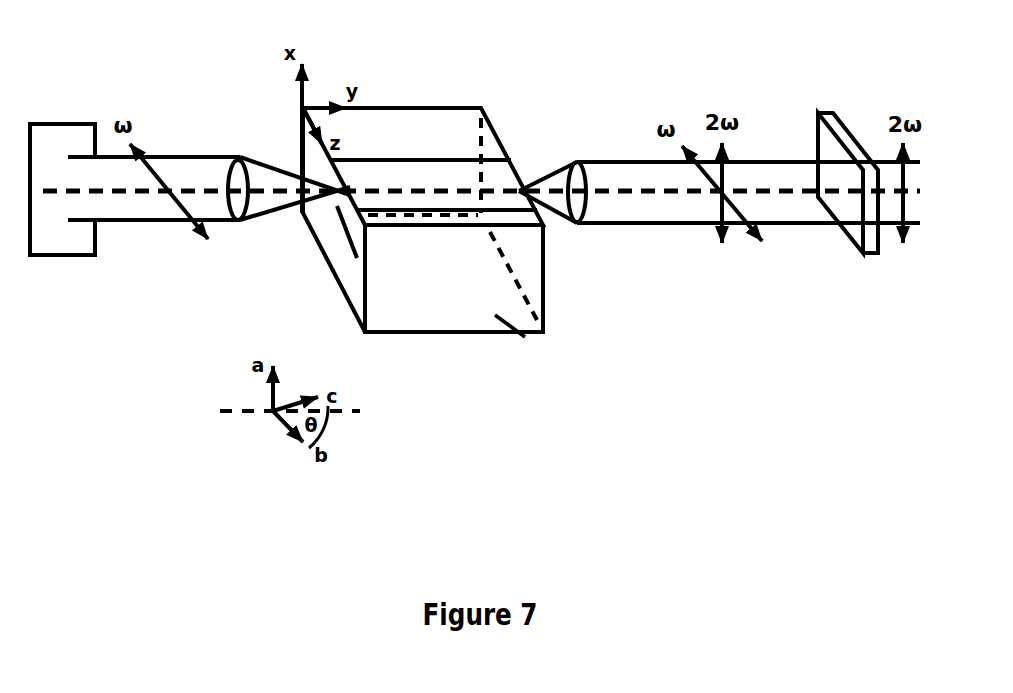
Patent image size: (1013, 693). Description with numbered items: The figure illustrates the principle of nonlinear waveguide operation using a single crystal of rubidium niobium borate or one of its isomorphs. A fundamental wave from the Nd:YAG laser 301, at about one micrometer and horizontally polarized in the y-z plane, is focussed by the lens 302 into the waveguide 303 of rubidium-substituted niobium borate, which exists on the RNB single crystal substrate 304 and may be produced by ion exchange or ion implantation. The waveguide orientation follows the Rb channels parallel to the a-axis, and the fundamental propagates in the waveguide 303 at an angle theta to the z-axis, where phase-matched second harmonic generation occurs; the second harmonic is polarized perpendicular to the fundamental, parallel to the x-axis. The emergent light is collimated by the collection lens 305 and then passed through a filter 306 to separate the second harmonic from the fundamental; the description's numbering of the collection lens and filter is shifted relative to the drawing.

The Nd:YAG laser 301 is at (52, 248).
The lens 302 is at (236, 160).
The waveguide 303 is at (343, 235).
The RNB single crystal substrate 304 is at (404, 316).
The filter 305 is at (577, 162).
The filter plate 306 is at (820, 117).